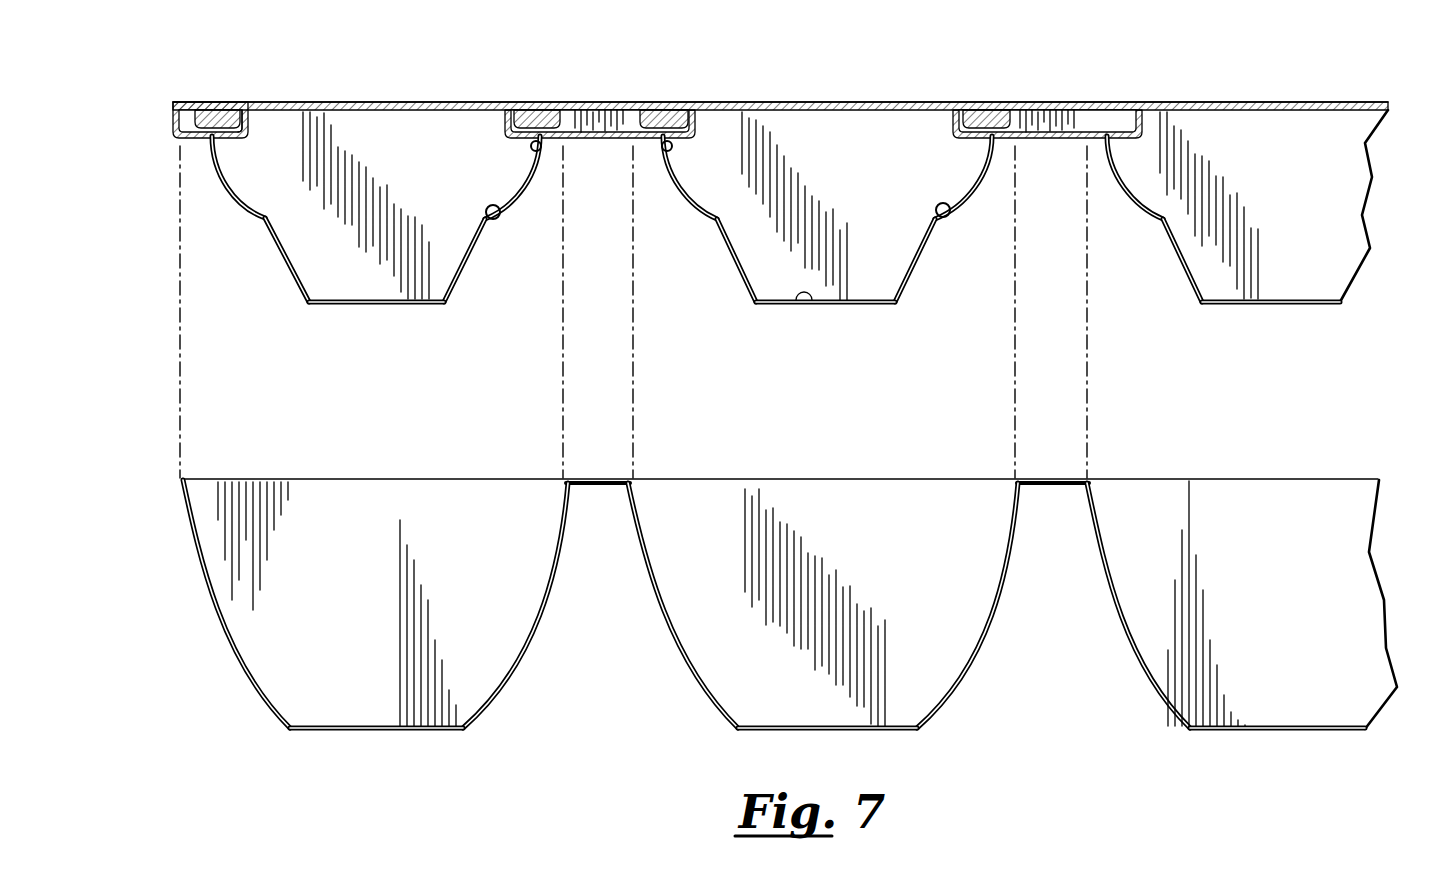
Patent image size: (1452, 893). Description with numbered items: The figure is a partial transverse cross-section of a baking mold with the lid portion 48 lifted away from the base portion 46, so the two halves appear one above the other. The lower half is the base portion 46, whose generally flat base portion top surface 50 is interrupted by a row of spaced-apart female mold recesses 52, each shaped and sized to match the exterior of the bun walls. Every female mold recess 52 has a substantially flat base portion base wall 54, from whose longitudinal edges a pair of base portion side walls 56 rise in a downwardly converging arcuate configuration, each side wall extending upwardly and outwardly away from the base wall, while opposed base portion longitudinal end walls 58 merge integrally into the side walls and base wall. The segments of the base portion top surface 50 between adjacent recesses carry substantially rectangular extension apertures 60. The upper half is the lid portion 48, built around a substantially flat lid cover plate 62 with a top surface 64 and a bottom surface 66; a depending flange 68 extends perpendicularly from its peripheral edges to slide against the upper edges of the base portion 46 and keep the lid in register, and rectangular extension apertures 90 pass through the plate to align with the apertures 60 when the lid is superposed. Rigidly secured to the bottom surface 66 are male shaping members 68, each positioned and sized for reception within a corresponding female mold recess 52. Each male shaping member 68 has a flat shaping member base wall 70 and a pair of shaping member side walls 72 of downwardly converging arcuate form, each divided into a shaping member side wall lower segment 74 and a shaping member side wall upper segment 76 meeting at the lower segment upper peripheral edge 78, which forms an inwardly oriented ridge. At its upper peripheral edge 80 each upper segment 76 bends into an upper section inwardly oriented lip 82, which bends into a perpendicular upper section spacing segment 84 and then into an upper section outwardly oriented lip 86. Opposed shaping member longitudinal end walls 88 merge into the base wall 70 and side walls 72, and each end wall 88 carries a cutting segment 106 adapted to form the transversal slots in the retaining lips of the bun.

The base portion 46 is at (817, 592).
The lid portion 48 is at (1395, 194).
The base portion top surface 50 is at (827, 447).
The female mold recess 52 is at (774, 596).
The base portion base wall 54 is at (365, 734).
The base portion side wall 56 is at (238, 663).
The base portion longitudinal end wall 58 is at (458, 490).
The extension aperture 60 is at (605, 480).
The lid cover plate 62 is at (1250, 102).
The top surface 64 is at (752, 103).
The bottom surface 66 is at (750, 112).
The male shaping member 68 is at (172, 110).
The shaping member base wall 70 is at (372, 302).
The shaping member side wall 72 is at (807, 239).
The shaping member side wall lower segment 74 is at (282, 264).
The shaping member side wall upper segment 76 is at (223, 183).
The shaping member side wall lower segment upper peripheral edge 78 is at (502, 214).
The shaping member side wall upper section upper peripheral edge 80 is at (543, 146).
The upper section inwardly oriented lip 82 is at (243, 140).
The upper section spacing segment 84 is at (232, 104).
The upper section outwardly oriented lip 86 is at (628, 103).
The shaping member longitudinal end wall 88 is at (410, 128).
The extension aperture 90 is at (590, 103).
The cutting segment 106 is at (553, 102).